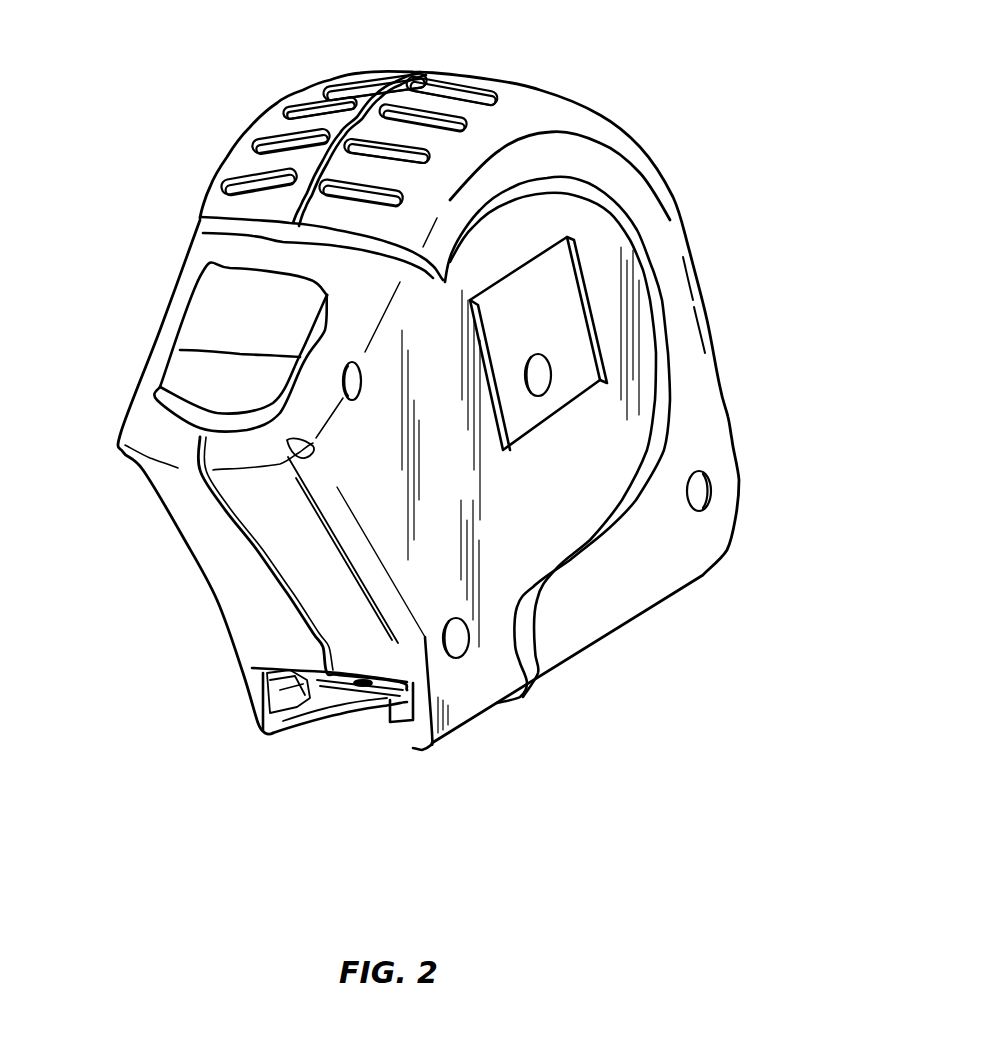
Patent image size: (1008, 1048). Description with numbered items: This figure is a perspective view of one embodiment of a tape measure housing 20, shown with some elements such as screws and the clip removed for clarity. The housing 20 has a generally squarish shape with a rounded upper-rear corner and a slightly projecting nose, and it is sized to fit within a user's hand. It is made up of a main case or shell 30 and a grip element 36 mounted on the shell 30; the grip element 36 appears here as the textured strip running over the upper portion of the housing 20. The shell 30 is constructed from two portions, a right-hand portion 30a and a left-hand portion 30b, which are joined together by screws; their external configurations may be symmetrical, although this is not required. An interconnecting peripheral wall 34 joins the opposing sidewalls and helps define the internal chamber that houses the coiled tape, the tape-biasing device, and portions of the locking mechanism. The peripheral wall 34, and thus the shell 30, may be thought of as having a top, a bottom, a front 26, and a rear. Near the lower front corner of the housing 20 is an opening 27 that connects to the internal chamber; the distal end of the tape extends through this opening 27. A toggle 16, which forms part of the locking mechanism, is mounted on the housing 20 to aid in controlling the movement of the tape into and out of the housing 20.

The housing 20 is at (107, 83).
The toggle 16 is at (183, 387).
The front 26 is at (328, 574).
The opening 27 is at (350, 733).
The shell 30 is at (197, 530).
The right-hand portion 30a is at (457, 678).
The left-hand portion 30b is at (253, 647).
The peripheral wall 34 is at (213, 257).
The grip element 36 is at (560, 117).